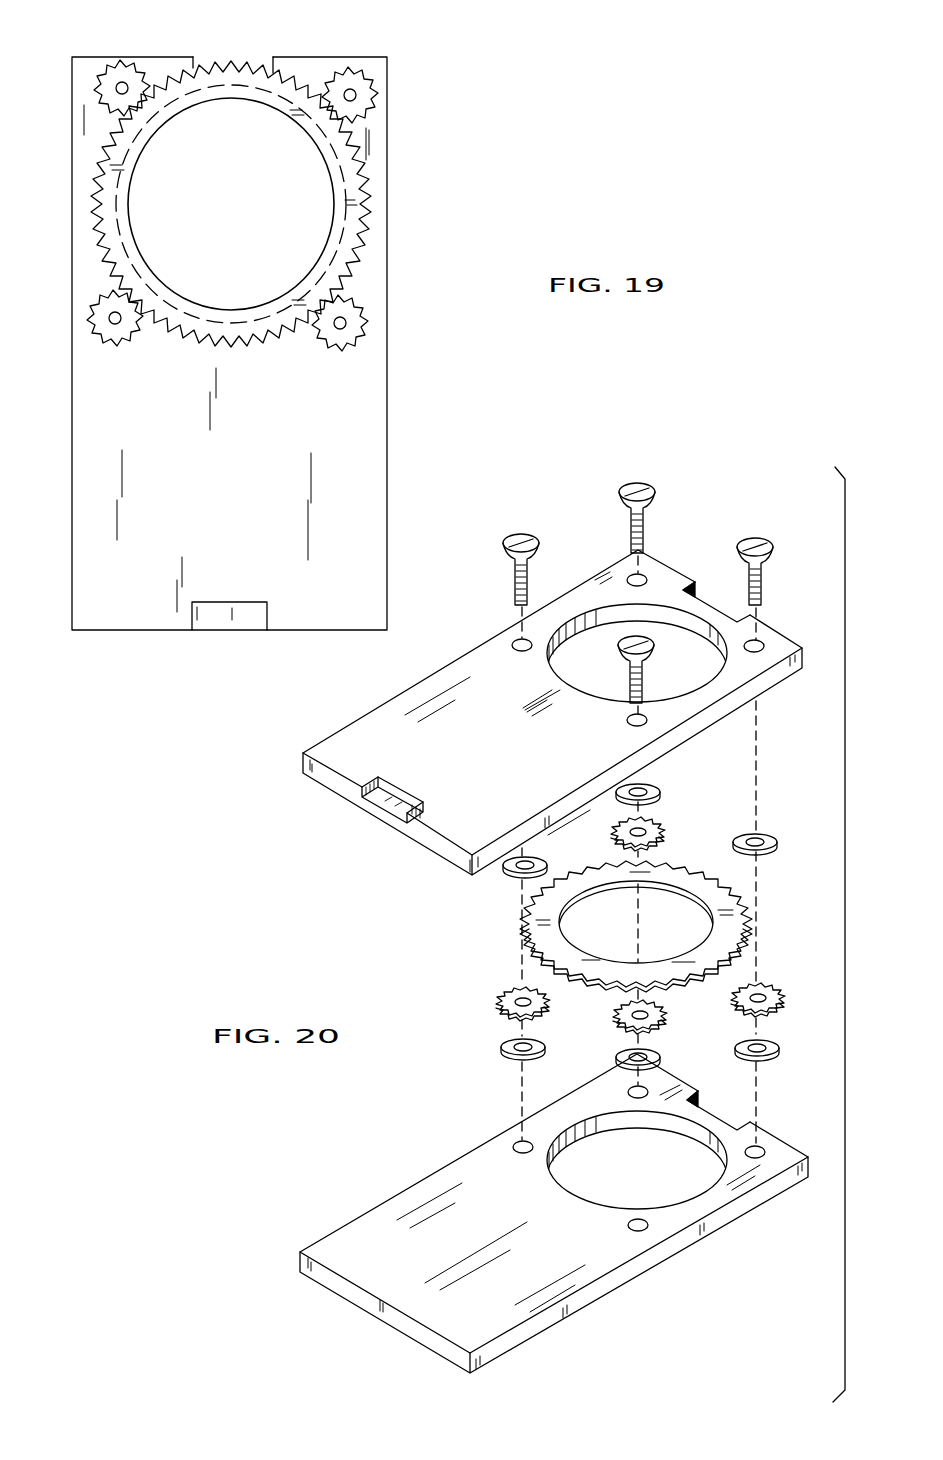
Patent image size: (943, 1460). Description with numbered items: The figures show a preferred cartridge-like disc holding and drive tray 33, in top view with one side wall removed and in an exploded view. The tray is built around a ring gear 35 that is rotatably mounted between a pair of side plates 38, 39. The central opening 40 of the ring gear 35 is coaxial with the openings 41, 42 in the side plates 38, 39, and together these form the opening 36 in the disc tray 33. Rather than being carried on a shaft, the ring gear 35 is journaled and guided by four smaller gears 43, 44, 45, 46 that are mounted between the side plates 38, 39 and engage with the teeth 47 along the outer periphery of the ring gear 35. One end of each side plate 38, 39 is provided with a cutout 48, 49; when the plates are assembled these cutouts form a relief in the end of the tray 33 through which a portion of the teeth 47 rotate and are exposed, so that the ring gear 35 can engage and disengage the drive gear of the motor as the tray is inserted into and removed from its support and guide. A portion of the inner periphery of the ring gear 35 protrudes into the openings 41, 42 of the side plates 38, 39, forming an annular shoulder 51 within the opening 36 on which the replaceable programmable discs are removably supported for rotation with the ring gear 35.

In FIG. 19, the disc holding and drive tray 33 is at (425, 123).
In FIG. 20, the disc holding and drive tray 33 is at (752, 483).
In FIG. 19, the ring gear 35 is at (366, 261).
In FIG. 20, the ring gear 35 is at (748, 905).
In FIG. 19, the opening in the disc tray 36 is at (308, 163).
In FIG. 20, the side plate 38 is at (763, 693).
In FIG. 19, the side plate 39 is at (386, 456).
In FIG. 20, the side plate 39 is at (670, 1257).
In FIG. 19, the central opening of the ring gear 40 is at (325, 227).
In FIG. 20, the central opening of the ring gear 40 is at (560, 935).
In FIG. 20, the opening in side plate 41 is at (547, 643).
In FIG. 19, the opening in side plate 42 is at (372, 197).
In FIG. 20, the opening in side plate 42 is at (560, 1137).
In FIG. 19, the smaller gear 43 is at (362, 80).
In FIG. 19, the smaller gear 44 is at (362, 347).
In FIG. 19, the smaller gear 45 is at (108, 340).
In FIG. 19, the smaller gear 46 is at (105, 72).
In FIG. 19, the teeth on the ring gear 47 is at (247, 60).
In FIG. 20, the teeth on the ring gear 47 is at (757, 937).
In FIG. 20, the cutout 48 is at (693, 593).
In FIG. 19, the cutout 49 is at (207, 63).
In FIG. 20, the cutout 49 is at (717, 1112).
In FIG. 19, the annular shoulder 51 is at (308, 283).